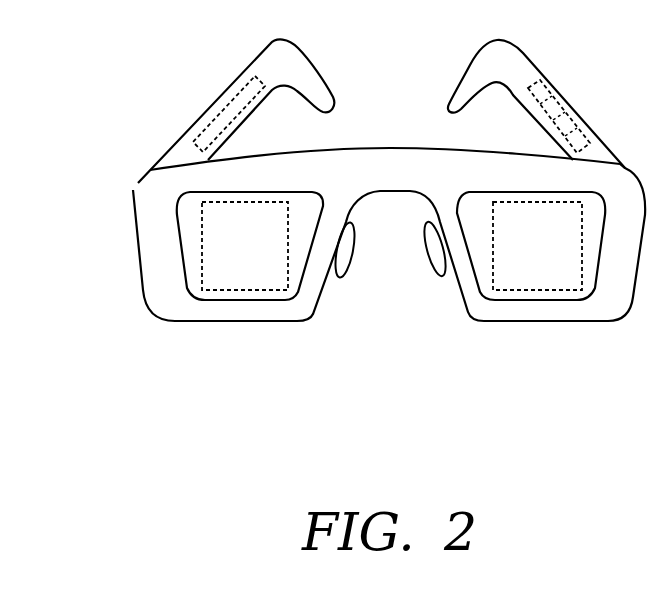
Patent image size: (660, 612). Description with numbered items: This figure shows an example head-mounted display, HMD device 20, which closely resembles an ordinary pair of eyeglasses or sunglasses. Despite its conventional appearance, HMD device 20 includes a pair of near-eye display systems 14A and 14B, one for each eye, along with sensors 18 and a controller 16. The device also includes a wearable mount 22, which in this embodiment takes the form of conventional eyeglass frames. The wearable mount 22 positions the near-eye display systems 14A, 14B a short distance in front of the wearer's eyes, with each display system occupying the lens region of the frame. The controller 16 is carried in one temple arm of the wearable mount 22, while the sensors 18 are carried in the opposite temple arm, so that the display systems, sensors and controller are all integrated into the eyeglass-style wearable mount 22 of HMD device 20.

The near-eye display system 14A is at (262, 257).
The near-eye display system 14B is at (555, 257).
The controller 16 is at (232, 103).
The sensors 18 is at (552, 68).
The HMD device 20 is at (357, 226).
The wearable mount 22 is at (133, 190).